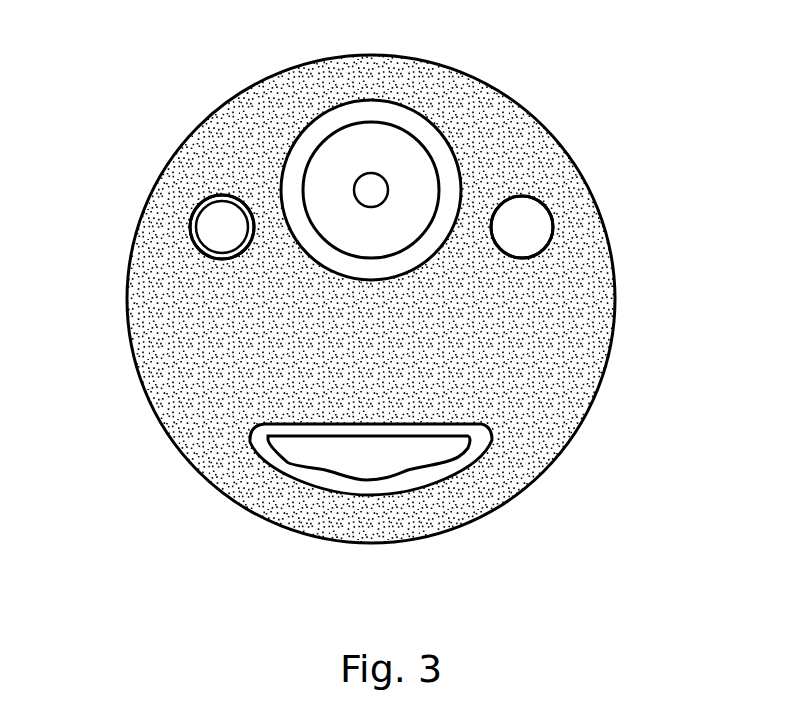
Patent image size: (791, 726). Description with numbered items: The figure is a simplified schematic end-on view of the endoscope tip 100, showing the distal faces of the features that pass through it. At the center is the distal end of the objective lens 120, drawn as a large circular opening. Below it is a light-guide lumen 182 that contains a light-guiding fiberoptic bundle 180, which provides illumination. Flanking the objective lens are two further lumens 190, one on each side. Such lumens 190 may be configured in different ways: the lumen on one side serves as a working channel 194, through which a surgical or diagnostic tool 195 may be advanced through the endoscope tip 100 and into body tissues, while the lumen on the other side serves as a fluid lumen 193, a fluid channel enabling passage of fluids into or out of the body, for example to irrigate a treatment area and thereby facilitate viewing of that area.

The endoscope tip 100 is at (615, 277).
The objective lens 120 is at (407, 168).
The light-guide fiber bundle 180 is at (457, 443).
The light-guide lumen 182 is at (445, 475).
The lumens 190 is at (225, 188).
The fluid lumen 193 is at (540, 217).
The working channel 194 is at (207, 205).
The tool 195 is at (207, 229).